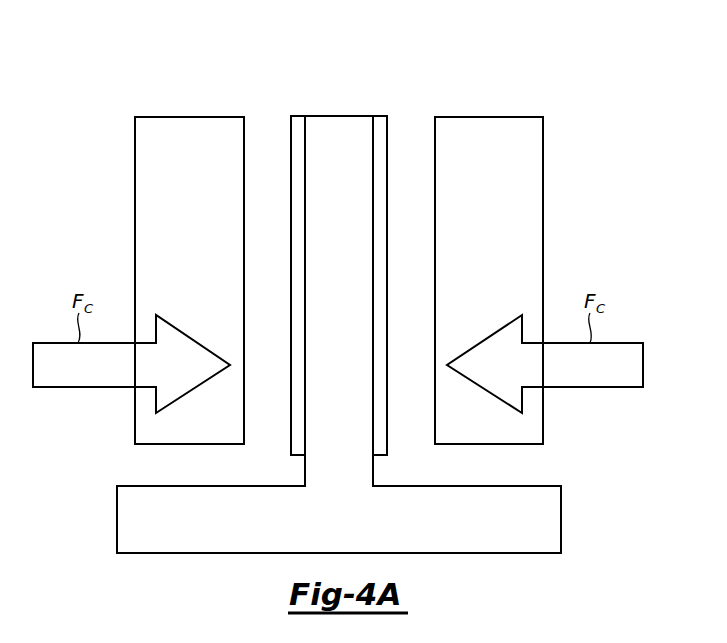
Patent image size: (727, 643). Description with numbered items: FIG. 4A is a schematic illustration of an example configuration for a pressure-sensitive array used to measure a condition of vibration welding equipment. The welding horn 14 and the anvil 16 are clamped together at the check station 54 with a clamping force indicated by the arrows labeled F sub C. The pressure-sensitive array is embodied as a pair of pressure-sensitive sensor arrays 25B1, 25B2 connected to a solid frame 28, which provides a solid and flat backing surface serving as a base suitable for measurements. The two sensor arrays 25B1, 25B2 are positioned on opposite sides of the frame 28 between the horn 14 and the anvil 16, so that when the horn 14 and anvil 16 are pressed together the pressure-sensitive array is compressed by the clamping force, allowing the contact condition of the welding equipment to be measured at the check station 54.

The welding horn 14 is at (195, 246).
The anvil 16 is at (496, 246).
The solid frame 28 is at (486, 529).
The pressure-sensitive sensor array 25B1 is at (291, 126).
The pressure-sensitive sensor array 25B2 is at (387, 126).
The check station 54 is at (587, 142).